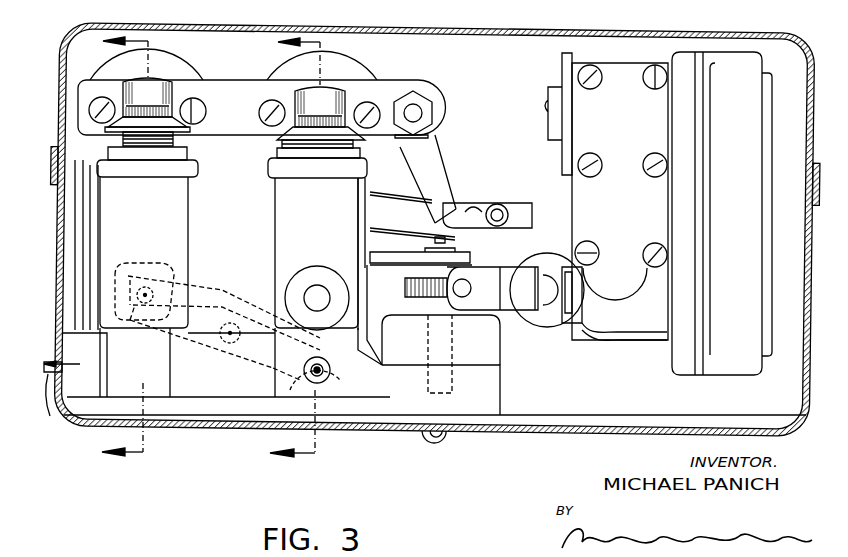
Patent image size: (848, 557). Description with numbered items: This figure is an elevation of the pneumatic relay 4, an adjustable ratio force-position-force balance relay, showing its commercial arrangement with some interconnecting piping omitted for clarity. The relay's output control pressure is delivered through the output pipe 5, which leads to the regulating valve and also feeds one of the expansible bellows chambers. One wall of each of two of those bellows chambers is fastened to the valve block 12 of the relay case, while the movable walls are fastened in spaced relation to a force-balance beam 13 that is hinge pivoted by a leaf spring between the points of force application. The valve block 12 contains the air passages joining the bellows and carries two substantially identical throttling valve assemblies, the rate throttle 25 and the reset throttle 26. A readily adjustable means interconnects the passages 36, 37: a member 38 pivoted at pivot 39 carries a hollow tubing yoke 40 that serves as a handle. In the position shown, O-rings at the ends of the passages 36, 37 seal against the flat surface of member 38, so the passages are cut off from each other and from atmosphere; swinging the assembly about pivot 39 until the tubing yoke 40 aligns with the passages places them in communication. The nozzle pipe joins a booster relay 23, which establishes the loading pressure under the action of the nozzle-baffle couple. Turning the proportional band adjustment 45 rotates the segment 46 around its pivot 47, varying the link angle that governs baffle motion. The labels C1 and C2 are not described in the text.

The relay 4 is at (505, 426).
The output pipe 5 is at (96, 297).
The valve block 12 is at (241, 221).
The force-balance beam 13 is at (242, 117).
The booster relay 23 is at (747, 220).
The rate throttle valve assembly 25 is at (159, 104).
The reset throttle valve assembly 26 is at (331, 118).
The passage 36 is at (147, 285).
The passage 37 is at (330, 373).
The member 38 is at (222, 357).
The pivot 39 is at (238, 338).
The hollow tubing yoke 40 is at (221, 288).
The proportional band adjustment 45 is at (537, 330).
The segment 46 is at (397, 263).
The pivot 47 is at (452, 245).
The first capacitor C1 is at (320, 278).
The second capacitor C2 is at (329, 375).